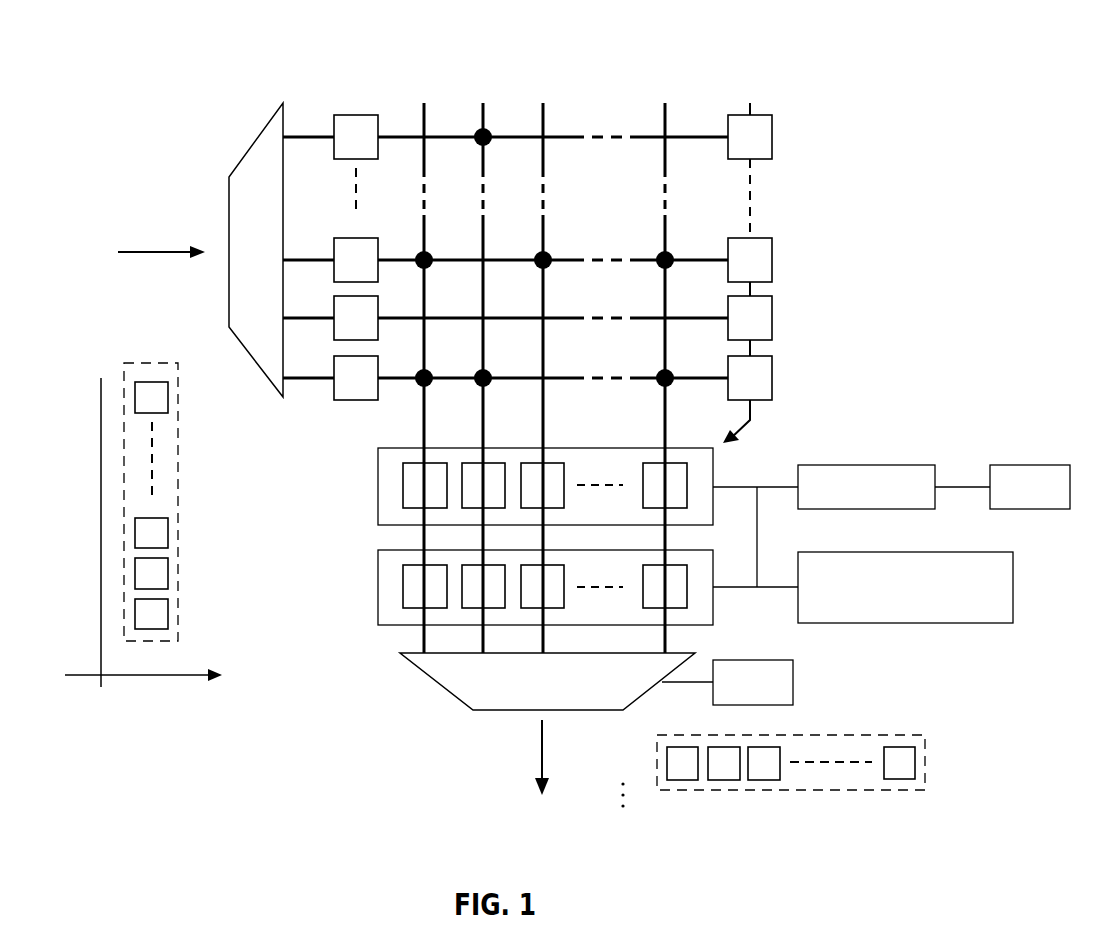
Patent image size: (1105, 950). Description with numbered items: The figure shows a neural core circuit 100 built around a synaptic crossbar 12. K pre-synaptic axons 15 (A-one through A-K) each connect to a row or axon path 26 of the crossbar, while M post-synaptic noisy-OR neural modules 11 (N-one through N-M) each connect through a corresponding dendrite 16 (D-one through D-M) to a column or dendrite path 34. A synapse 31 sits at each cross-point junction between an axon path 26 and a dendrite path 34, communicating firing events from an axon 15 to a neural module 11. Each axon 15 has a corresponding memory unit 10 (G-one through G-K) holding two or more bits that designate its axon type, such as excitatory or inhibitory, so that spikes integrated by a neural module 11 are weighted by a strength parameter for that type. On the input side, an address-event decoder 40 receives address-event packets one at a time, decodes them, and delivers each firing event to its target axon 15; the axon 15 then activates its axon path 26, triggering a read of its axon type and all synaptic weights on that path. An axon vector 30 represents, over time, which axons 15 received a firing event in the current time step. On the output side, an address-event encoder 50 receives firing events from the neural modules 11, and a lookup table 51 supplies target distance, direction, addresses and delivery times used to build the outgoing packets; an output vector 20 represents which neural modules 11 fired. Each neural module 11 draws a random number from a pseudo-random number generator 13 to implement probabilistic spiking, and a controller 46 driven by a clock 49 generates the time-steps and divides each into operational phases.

The neural core circuit 100 is at (513, 34).
The address-event decoder 40 is at (229, 203).
The synaptic crossbar 12 is at (808, 182).
The axon path 26 is at (686, 133).
The dendrite path 34 is at (545, 232).
The synapse 31 is at (489, 129).
The axon 15 is at (355, 399).
The memory unit 10 is at (772, 318).
The dendrite 16 is at (403, 487).
The neural module 11 is at (403, 587).
The controller 46 is at (870, 465).
The clock 49 is at (1030, 465).
The pseudo-random number generator 13 is at (907, 623).
The address-event encoder 50 is at (430, 680).
The lookup table 51 is at (737, 660).
The output vector 20 is at (795, 735).
The axon vector 30 is at (178, 505).